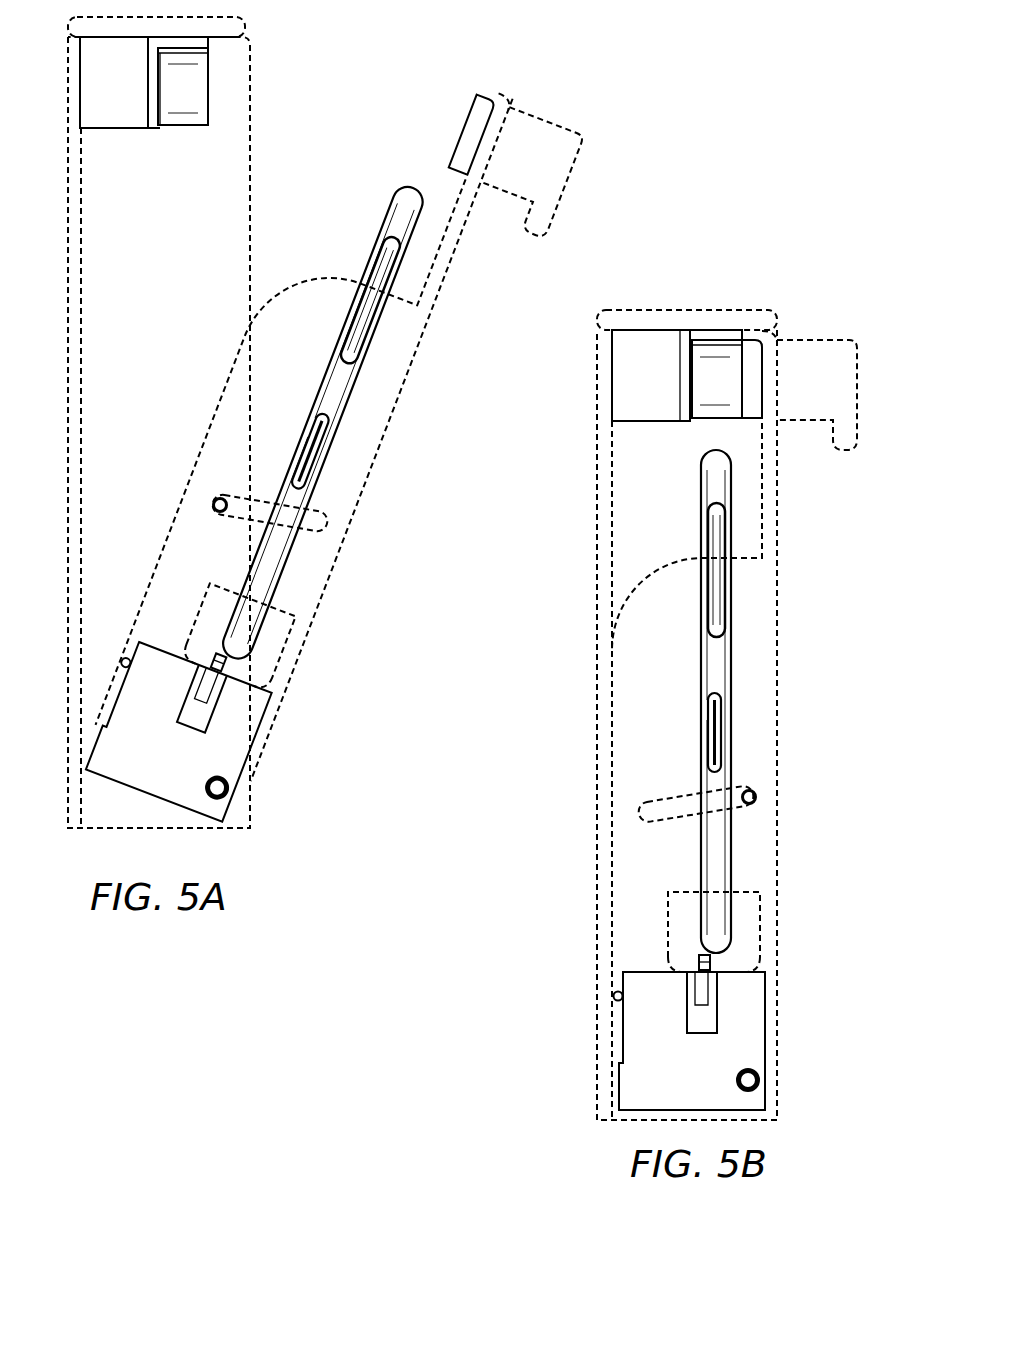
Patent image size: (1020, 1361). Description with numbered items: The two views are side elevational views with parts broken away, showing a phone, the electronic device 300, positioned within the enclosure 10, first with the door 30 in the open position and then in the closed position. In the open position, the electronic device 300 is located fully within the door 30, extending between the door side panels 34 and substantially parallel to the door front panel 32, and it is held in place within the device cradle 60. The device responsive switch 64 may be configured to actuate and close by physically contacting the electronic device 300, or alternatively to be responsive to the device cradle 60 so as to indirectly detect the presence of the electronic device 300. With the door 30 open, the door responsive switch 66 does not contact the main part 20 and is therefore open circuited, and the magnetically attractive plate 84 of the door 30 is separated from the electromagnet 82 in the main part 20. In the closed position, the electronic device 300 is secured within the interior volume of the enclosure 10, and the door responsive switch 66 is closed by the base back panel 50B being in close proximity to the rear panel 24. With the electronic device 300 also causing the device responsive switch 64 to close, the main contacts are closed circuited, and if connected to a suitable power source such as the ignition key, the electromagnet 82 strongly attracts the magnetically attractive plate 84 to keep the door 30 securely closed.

In FIG. 5A, the enclosure 10 is at (308, 838).
In FIG. 5B, the enclosure 10 is at (560, 956).
In FIG. 5A, the main part 20 is at (66, 172).
In FIG. 5B, the rear panel 24 is at (597, 978).
In FIG. 5A, the door 30 is at (437, 312).
In FIG. 5B, the door 30 is at (778, 507).
In FIG. 5A, the door front panel 32 is at (377, 468).
In FIG. 5A, the door side panels 34 is at (385, 360).
In FIG. 5B, the base back panel 50B is at (623, 1052).
In FIG. 5A, the device cradle 60 is at (287, 652).
In FIG. 5B, the device cradle 60 is at (714, 932).
In FIG. 5A, the device responsive switch 64 is at (217, 657).
In FIG. 5B, the device responsive switch 64 is at (697, 957).
In FIG. 5A, the door responsive switch 66 is at (123, 660).
In FIG. 5B, the door responsive switch 66 is at (618, 1003).
In FIG. 5A, the electromagnet 82 is at (208, 90).
In FIG. 5B, the electromagnet 82 is at (718, 340).
In FIG. 5A, the magnetically attractive plate 84 is at (470, 122).
In FIG. 5B, the magnetically attractive plate 84 is at (745, 340).
In FIG. 5A, the electronic device 300 is at (400, 207).
In FIG. 5B, the electronic device 300 is at (733, 662).